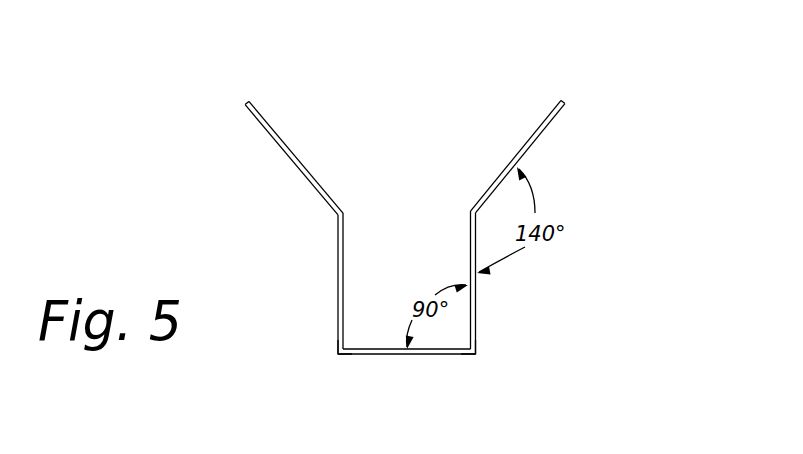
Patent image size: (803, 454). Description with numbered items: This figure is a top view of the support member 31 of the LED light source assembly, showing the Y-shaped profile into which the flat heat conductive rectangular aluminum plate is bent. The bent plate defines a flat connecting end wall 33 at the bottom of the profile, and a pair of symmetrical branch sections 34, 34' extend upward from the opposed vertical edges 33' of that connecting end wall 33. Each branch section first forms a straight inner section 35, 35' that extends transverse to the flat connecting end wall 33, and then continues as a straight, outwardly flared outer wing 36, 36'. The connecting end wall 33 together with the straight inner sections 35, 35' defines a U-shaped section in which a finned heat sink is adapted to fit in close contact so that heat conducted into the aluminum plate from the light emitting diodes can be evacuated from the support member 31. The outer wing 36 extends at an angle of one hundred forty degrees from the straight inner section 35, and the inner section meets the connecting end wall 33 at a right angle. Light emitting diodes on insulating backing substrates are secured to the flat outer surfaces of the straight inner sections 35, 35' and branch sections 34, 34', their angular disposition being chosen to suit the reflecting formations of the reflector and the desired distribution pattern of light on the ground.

The support member 31 is at (445, 215).
The connecting end wall 33 is at (392, 375).
The opposed vertical edges 33' is at (445, 336).
The branch section 34 is at (573, 155).
The branch section 34' is at (290, 181).
The straight inner section 35 is at (509, 282).
The straight inner section 35' is at (302, 283).
The outwardly flared outer wing 36 is at (545, 158).
The outwardly flared outer wing 36' is at (276, 160).